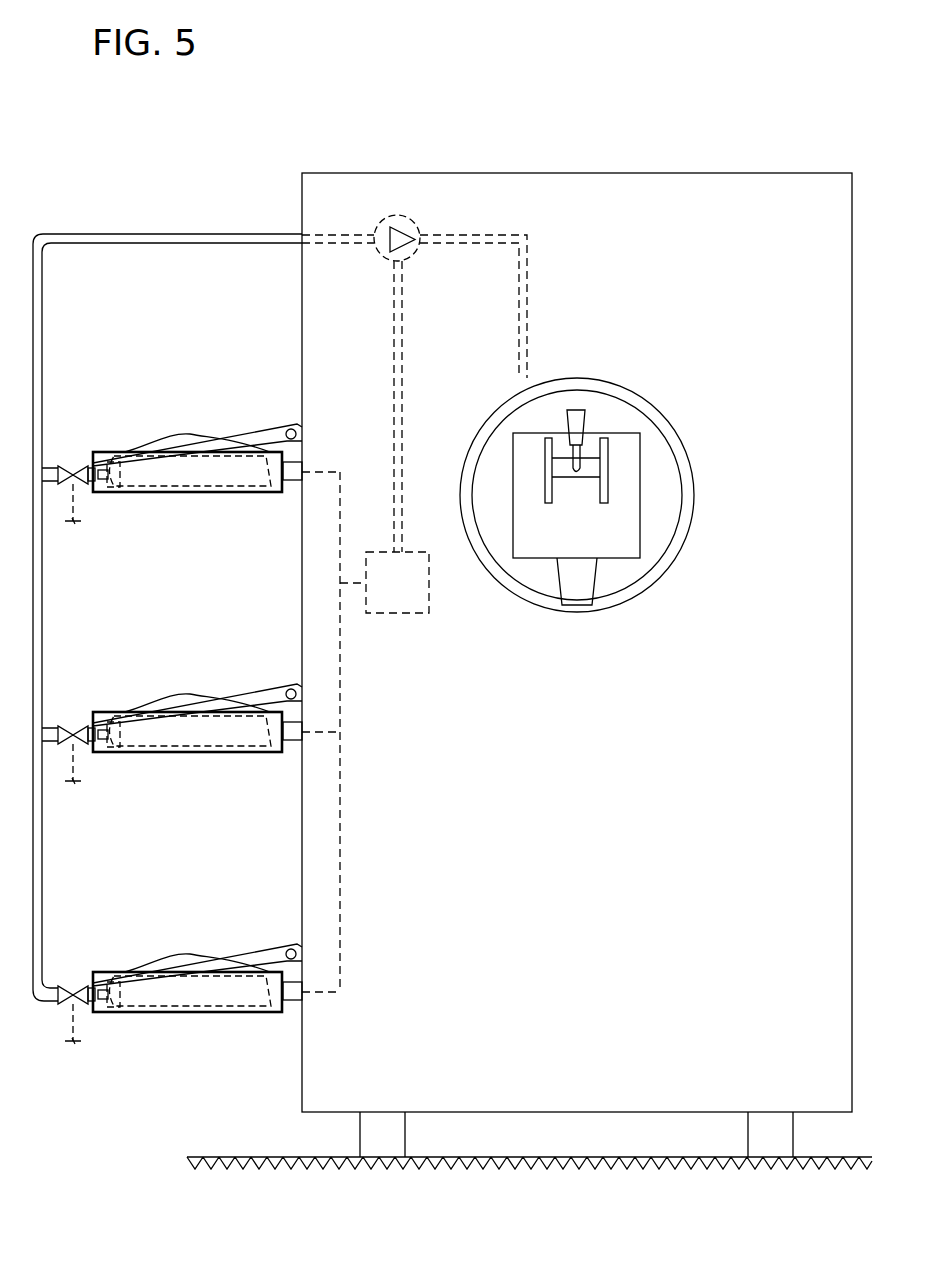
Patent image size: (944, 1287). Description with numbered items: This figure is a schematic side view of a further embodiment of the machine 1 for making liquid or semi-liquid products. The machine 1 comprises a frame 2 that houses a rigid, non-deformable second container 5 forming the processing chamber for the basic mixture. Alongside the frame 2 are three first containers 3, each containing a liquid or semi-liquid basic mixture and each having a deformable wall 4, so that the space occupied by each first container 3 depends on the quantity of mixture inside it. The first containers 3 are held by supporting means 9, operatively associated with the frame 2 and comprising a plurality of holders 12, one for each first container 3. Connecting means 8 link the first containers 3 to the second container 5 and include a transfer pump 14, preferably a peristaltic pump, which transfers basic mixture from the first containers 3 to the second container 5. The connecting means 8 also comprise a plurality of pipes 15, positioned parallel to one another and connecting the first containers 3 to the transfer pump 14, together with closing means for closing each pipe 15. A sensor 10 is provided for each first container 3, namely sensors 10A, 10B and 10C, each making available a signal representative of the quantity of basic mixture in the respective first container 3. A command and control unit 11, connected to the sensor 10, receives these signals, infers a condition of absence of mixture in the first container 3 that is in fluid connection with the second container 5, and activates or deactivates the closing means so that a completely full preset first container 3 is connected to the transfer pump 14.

The machine for making liquid or semi-liquid products 1 is at (562, 107).
The frame 2 is at (696, 171).
The first container 3 is at (167, 436).
The deformable wall 4 is at (218, 436).
The second container 5 is at (530, 610).
The connecting means 8 is at (461, 231).
The supporting means 9 is at (170, 776).
The sensor 10 is at (261, 773).
The first sensor 10A is at (292, 486).
The second sensor 10B is at (292, 750).
The third sensor 10C is at (292, 1010).
The command and control unit 11 is at (384, 582).
The holder 12 is at (165, 496).
The transfer pump 14 is at (386, 263).
The pipe 15 is at (73, 461).